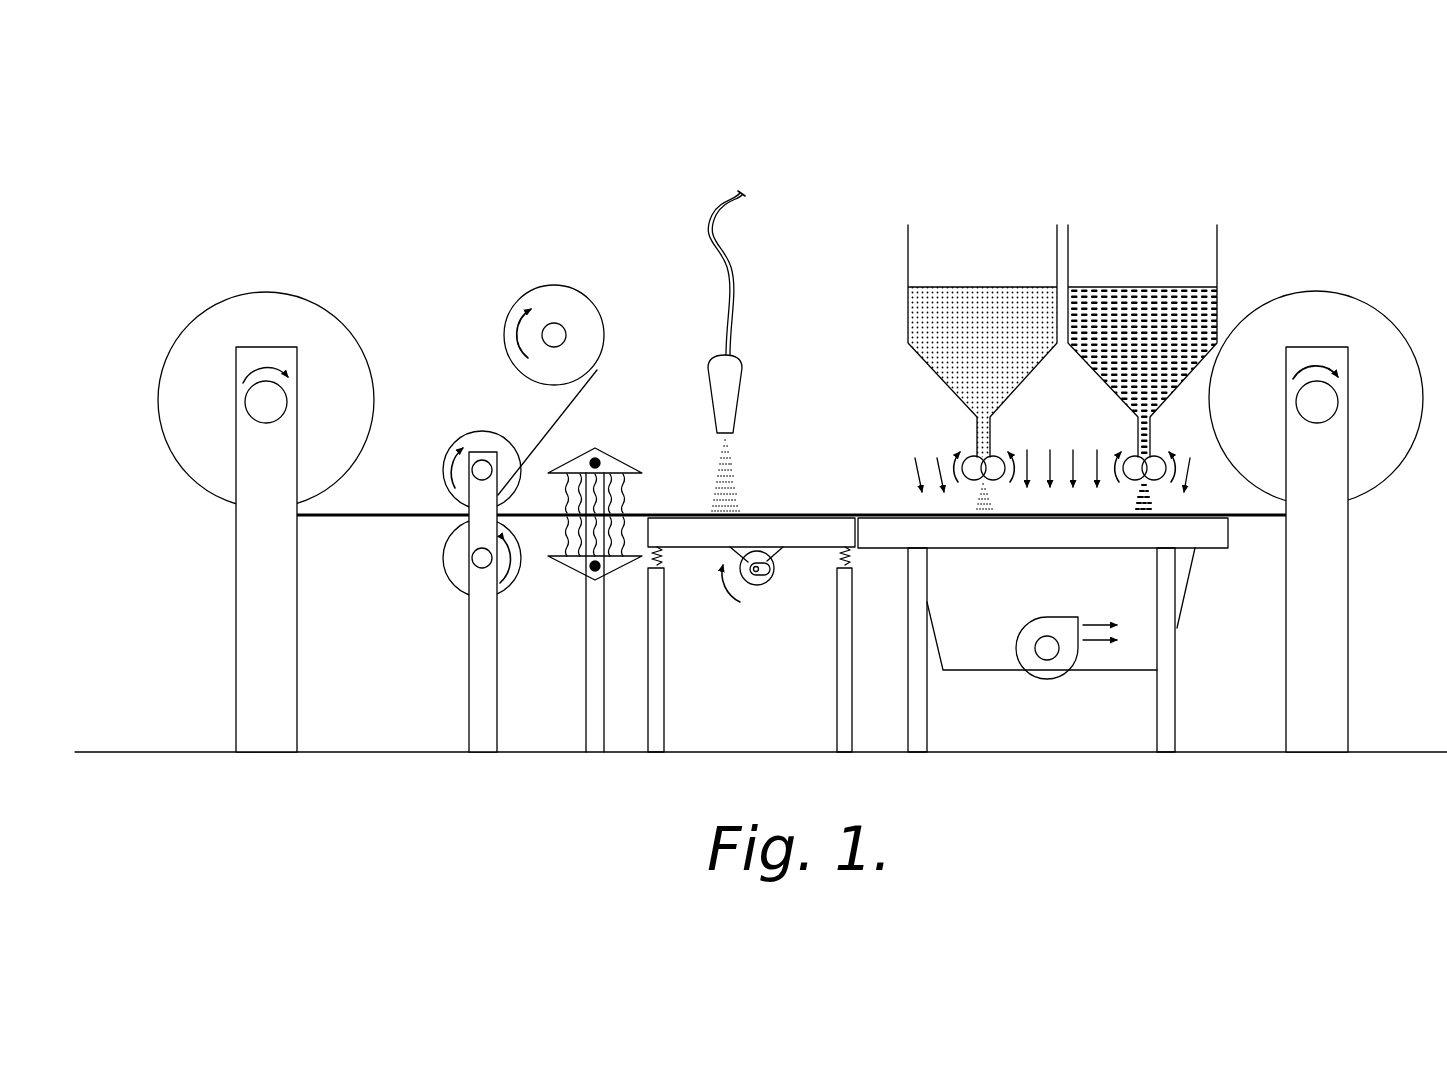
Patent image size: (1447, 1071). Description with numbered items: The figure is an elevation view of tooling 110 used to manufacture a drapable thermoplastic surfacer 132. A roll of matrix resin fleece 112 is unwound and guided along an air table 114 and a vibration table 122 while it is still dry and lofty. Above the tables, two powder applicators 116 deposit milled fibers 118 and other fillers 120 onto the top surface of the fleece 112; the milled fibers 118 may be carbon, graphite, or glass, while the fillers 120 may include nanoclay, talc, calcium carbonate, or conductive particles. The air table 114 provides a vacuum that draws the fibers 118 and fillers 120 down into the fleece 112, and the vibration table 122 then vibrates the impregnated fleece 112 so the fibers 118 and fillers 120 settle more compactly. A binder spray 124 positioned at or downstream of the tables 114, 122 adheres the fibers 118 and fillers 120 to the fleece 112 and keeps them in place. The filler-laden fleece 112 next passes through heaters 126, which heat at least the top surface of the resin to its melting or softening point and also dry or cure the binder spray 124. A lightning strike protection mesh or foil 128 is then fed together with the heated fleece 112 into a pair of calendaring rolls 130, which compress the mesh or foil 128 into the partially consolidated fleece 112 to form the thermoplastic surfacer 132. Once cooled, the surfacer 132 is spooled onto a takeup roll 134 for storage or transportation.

The tooling 110 is at (370, 133).
The matrix resin fleece 112 is at (1340, 308).
The air table 114 is at (1200, 533).
The powder applicators 116 is at (1062, 313).
The milled fibers 118 is at (1117, 298).
The fillers 120 is at (957, 298).
The vibration table 122 is at (797, 535).
The binder spray 124 is at (735, 375).
The heaters 126 is at (595, 457).
The lightning strike protection mesh or foil 128 is at (572, 302).
The calendaring rolls 130 is at (414, 533).
The thermoplastic surfacer 132 is at (373, 515).
The takeup roll 134 is at (213, 328).